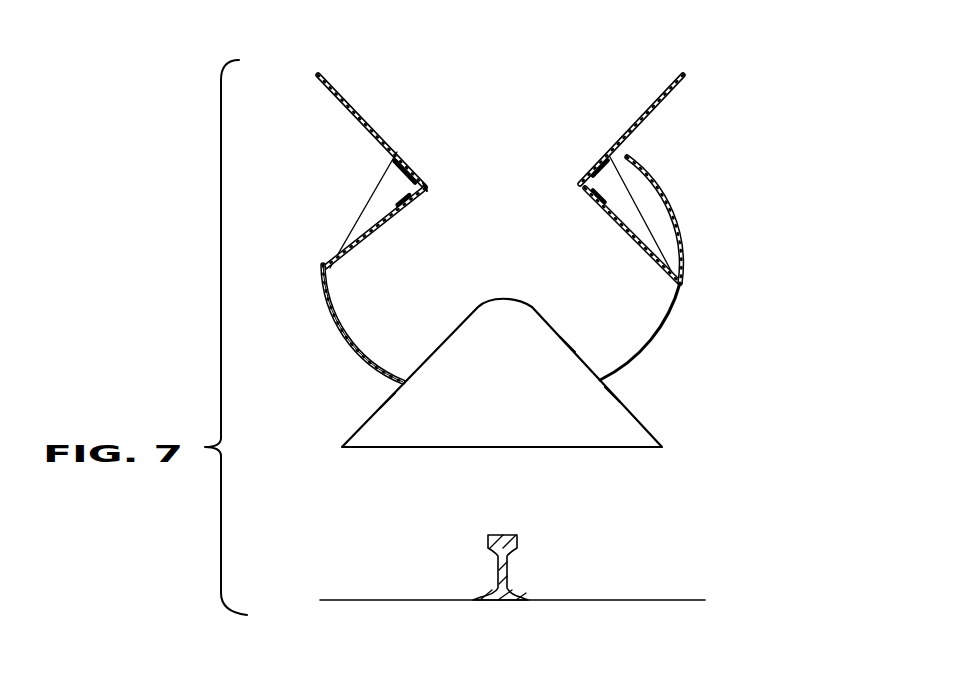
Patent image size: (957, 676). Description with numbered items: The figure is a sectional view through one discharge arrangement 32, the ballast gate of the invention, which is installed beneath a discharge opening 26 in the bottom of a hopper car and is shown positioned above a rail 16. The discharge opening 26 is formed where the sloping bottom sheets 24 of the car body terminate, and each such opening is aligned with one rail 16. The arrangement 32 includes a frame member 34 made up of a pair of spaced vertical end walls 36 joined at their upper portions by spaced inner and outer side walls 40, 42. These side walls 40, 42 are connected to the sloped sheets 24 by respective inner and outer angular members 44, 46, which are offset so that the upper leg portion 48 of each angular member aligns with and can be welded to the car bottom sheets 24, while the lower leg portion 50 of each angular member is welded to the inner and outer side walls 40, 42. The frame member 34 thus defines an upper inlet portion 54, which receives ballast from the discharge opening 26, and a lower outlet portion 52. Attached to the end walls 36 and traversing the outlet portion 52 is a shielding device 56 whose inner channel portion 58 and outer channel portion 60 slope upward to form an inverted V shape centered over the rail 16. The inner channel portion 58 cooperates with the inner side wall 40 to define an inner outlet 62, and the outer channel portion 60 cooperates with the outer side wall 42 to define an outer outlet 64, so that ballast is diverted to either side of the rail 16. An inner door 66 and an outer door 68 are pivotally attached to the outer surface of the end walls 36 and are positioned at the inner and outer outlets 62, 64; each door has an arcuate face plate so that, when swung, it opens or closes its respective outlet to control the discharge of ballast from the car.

The rail 16 is at (488, 540).
The sheet 24 is at (347, 108).
The discharge opening 26 is at (532, 98).
The discharge arrangement 32 is at (754, 127).
The frame member 34 is at (340, 242).
The end wall 36 is at (512, 409).
The inner side wall 40 is at (368, 227).
The outer side wall 42 is at (640, 248).
The inner angular member 44 is at (427, 185).
The outer angular member 46 is at (578, 185).
The upper leg portion 48 is at (405, 177).
The lower leg portion 50 is at (408, 207).
The lower outlet portion 52 is at (519, 287).
The upper inlet portion 54 is at (522, 207).
The shielding device 56 is at (565, 347).
The inner channel portion 58 is at (387, 393).
The outer channel portion 60 is at (612, 387).
The inner outlet 62 is at (357, 315).
The outer outlet 64 is at (640, 328).
The inner door 66 is at (335, 323).
The outer door 68 is at (682, 220).